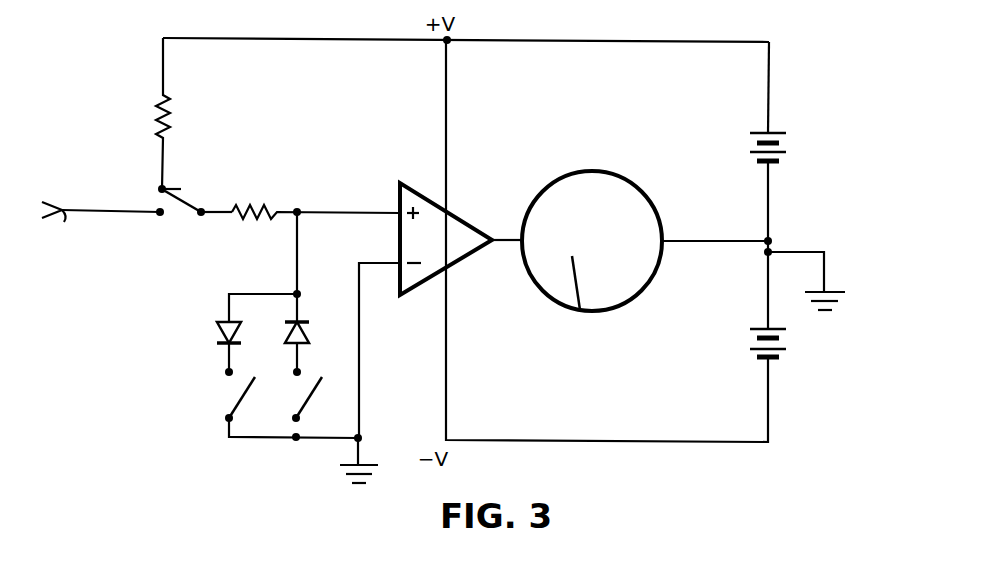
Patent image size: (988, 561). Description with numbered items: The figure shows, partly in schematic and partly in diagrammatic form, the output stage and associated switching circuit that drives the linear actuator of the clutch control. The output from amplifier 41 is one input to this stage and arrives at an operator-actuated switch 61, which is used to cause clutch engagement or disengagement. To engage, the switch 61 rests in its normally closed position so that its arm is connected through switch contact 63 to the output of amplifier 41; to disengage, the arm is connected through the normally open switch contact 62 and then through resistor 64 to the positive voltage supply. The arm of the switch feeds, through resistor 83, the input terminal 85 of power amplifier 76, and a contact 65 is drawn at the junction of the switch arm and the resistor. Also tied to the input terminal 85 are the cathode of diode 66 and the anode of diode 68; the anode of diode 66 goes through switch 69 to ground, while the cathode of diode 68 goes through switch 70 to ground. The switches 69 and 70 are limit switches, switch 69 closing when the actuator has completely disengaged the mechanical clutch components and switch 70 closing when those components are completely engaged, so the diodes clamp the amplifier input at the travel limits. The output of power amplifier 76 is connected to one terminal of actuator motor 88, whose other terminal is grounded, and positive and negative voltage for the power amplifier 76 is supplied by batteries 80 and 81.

The amplifier 41 is at (74, 273).
The switch 61 is at (192, 185).
The normally open switch contact 62 is at (160, 188).
The switch contact 63 is at (163, 215).
The resistor 64 is at (160, 118).
The switch arm contact 65 is at (206, 207).
The diode 66 is at (216, 332).
The diode 68 is at (301, 337).
The switch 69 is at (240, 397).
The switch 70 is at (310, 392).
The power amplifier 76 is at (478, 212).
The battery 80 is at (778, 134).
The battery 81 is at (772, 359).
The resistor 83 is at (255, 219).
The input terminal 85 is at (298, 211).
The actuator motor 88 is at (608, 170).